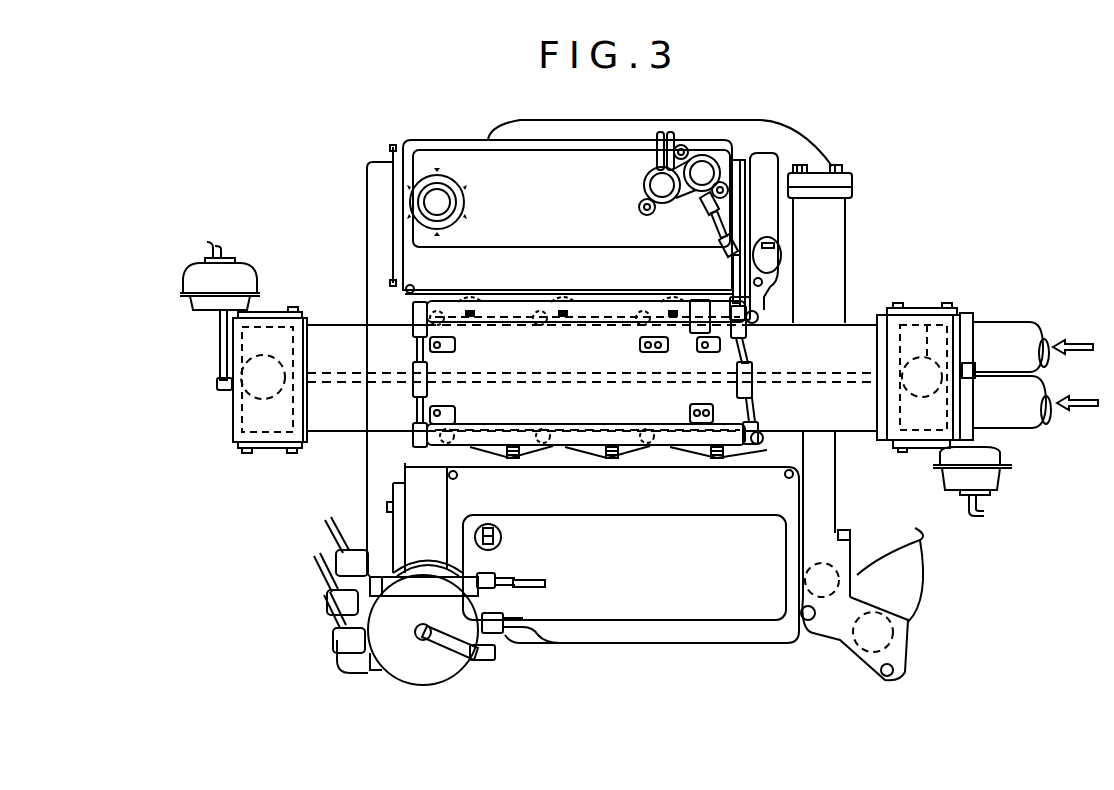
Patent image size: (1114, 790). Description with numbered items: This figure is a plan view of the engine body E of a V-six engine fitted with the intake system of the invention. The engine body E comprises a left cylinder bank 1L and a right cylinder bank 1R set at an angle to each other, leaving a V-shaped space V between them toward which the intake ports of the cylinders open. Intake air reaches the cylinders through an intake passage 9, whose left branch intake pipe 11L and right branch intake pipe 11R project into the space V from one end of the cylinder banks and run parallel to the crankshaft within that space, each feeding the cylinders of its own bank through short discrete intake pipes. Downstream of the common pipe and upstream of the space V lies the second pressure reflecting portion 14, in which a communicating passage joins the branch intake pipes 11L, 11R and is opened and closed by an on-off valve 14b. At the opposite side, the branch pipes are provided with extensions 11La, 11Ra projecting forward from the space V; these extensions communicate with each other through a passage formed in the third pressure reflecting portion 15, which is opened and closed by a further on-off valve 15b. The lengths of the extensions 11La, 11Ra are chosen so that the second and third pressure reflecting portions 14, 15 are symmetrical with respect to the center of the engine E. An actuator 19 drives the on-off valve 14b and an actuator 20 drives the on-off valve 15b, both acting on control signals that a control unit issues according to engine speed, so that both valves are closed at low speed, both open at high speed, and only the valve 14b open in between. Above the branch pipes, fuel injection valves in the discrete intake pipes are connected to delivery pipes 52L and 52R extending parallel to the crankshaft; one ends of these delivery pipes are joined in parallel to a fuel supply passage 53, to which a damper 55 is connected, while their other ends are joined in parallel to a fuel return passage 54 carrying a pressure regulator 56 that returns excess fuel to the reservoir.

The left cylinder bank 1L is at (489, 162).
The right cylinder bank 1R is at (653, 600).
The intake passage 9 is at (1007, 306).
The left branch intake pipe 11L is at (1032, 320).
The right branch intake pipe 11R is at (1028, 423).
The extension of left branch intake pipe 11La is at (333, 326).
The extension of right branch intake pipe 11Ra is at (327, 434).
The second pressure reflecting portion 14 is at (919, 290).
The on-off valve 14b is at (930, 305).
The third pressure reflecting portion 15 is at (250, 459).
The on-off valve 15b is at (232, 407).
The actuator 19 is at (997, 473).
The actuator 20 is at (192, 275).
The delivery pipe 52L is at (582, 322).
The delivery pipe 52R is at (575, 442).
The fuel supply passage 53 is at (750, 362).
The fuel return passage 54 is at (413, 367).
The damper 55 is at (702, 168).
The pressure regulator 56 is at (645, 184).
The engine body E is at (334, 247).
The V-shaped space V is at (776, 452).